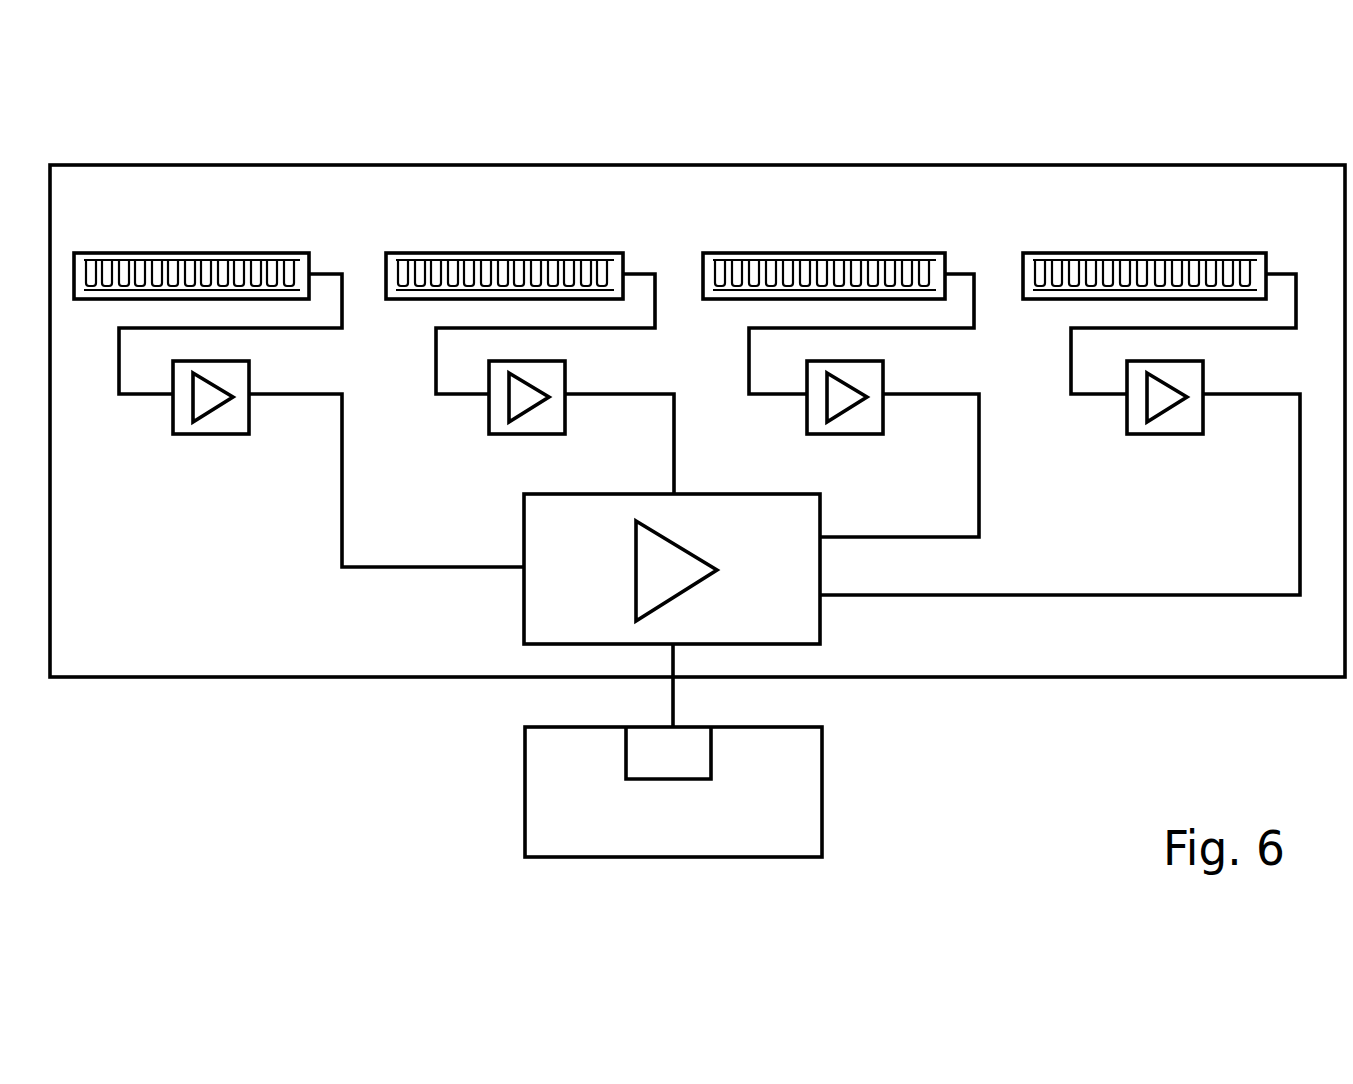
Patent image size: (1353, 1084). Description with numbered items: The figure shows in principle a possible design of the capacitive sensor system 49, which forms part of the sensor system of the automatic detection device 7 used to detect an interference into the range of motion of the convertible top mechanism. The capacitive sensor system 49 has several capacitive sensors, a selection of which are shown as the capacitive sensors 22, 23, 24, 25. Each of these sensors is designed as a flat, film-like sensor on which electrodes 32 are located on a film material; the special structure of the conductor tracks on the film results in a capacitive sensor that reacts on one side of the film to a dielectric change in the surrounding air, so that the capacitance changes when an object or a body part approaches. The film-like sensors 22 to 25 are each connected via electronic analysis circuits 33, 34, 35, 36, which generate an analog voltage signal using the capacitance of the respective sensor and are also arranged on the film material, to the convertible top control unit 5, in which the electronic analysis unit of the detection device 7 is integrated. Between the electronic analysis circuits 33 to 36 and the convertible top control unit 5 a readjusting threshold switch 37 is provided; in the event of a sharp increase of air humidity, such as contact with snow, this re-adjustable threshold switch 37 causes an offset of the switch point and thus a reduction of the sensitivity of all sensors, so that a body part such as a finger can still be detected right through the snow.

The convertible top control unit 5 is at (744, 847).
The detection device 7 is at (663, 779).
The capacitive sensor 22 is at (191, 181).
The capacitive sensor 23 is at (503, 253).
The capacitive sensor 24 is at (810, 253).
The capacitive sensor 25 is at (1123, 253).
The electrodes 32 is at (137, 272).
The electronic analysis circuit 33 is at (249, 373).
The electronic analysis circuit 34 is at (565, 373).
The electronic analysis circuit 35 is at (883, 373).
The electronic analysis circuit 36 is at (1203, 373).
The readjusting threshold switch 37 is at (524, 608).
The capacitive sensor system 49 is at (290, 677).